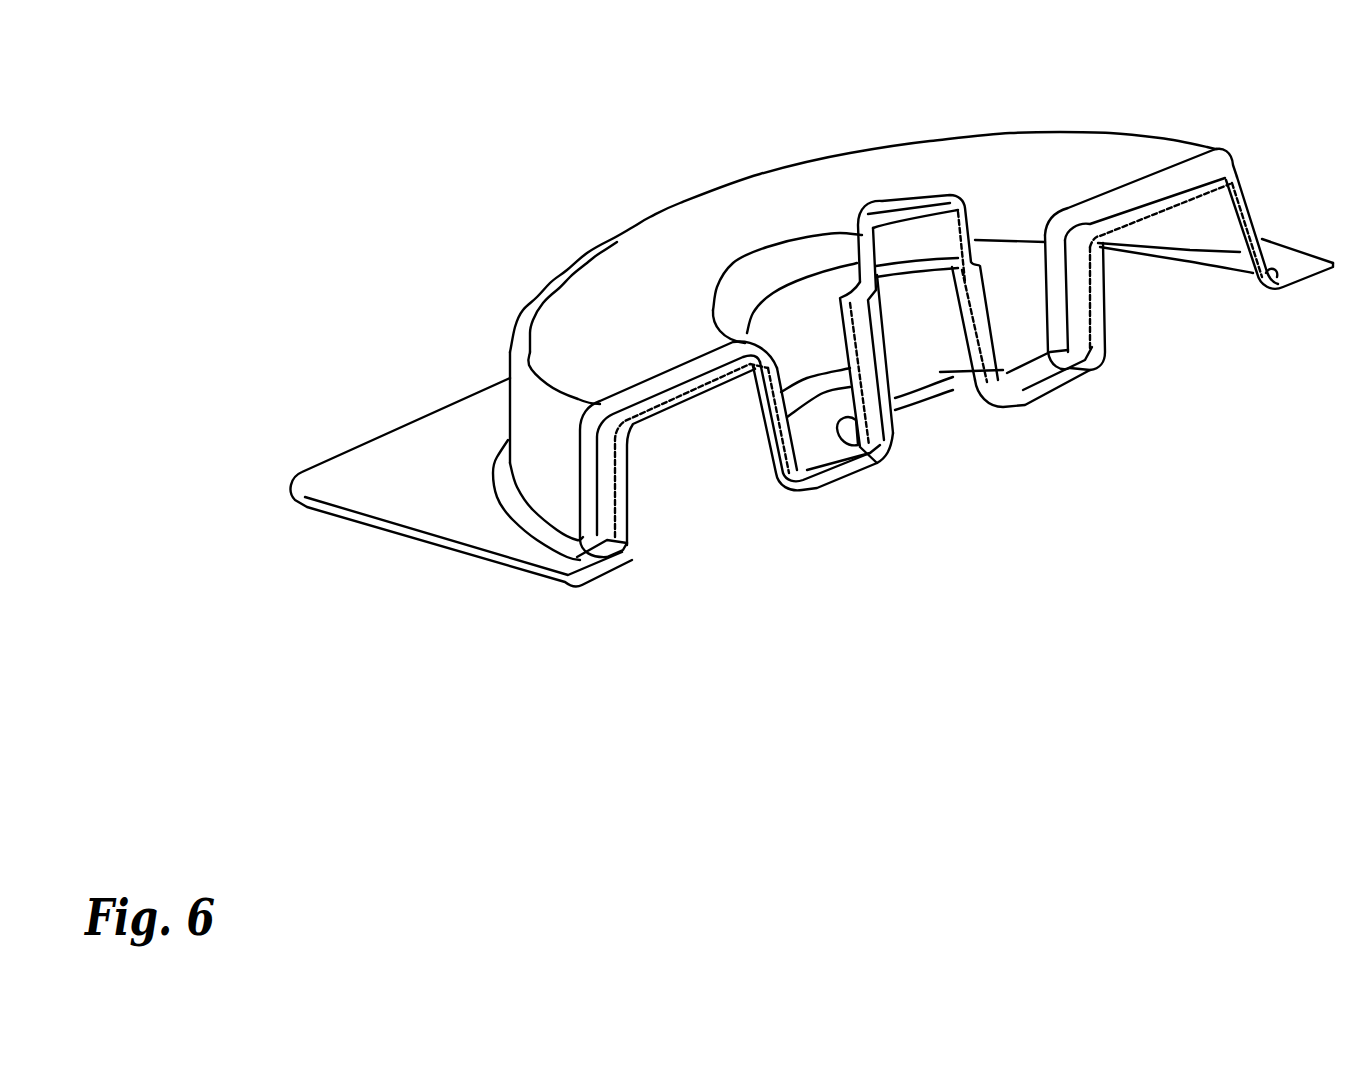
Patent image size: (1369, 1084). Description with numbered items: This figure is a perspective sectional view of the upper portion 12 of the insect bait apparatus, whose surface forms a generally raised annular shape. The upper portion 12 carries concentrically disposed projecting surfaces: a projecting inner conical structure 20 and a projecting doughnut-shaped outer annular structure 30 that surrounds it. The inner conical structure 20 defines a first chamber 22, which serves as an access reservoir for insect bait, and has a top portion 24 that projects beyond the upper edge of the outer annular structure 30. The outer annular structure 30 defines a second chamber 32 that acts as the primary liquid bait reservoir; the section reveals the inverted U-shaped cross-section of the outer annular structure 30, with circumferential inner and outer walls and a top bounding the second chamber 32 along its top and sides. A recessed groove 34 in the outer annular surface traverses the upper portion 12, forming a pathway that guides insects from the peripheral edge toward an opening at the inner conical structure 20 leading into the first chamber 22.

The upper portion 12 is at (318, 477).
The inner conical structure 20 is at (965, 229).
The first chamber 22 is at (945, 346).
The top portion 24 is at (863, 238).
The outer annular structure 30 is at (572, 293).
The second chamber 32 is at (708, 486).
The recessed groove 34 is at (1190, 180).